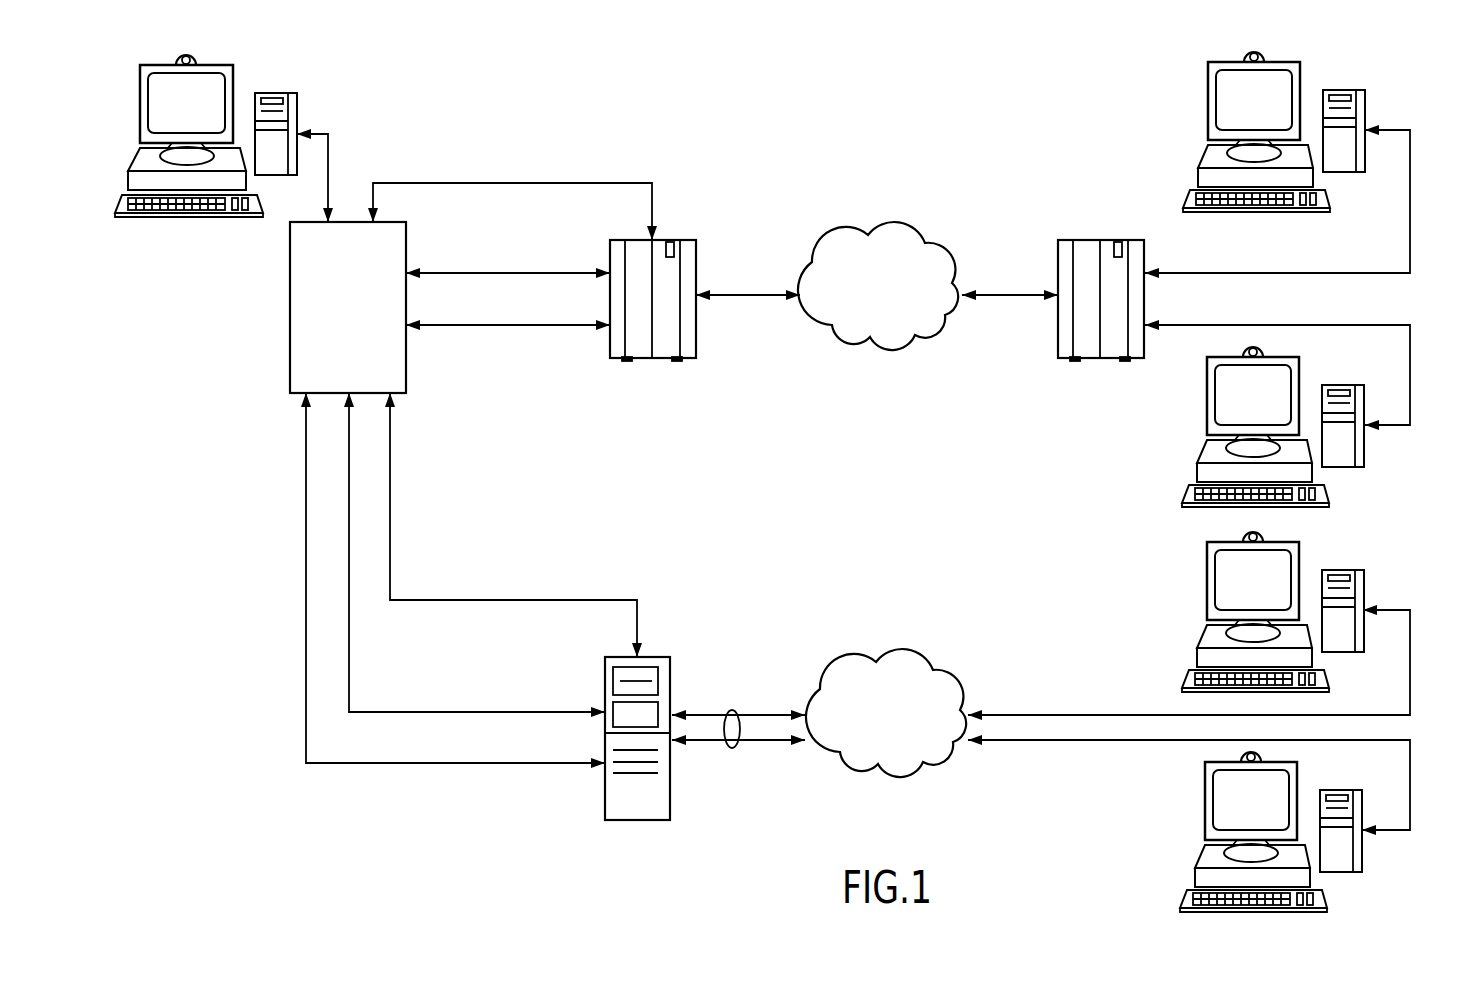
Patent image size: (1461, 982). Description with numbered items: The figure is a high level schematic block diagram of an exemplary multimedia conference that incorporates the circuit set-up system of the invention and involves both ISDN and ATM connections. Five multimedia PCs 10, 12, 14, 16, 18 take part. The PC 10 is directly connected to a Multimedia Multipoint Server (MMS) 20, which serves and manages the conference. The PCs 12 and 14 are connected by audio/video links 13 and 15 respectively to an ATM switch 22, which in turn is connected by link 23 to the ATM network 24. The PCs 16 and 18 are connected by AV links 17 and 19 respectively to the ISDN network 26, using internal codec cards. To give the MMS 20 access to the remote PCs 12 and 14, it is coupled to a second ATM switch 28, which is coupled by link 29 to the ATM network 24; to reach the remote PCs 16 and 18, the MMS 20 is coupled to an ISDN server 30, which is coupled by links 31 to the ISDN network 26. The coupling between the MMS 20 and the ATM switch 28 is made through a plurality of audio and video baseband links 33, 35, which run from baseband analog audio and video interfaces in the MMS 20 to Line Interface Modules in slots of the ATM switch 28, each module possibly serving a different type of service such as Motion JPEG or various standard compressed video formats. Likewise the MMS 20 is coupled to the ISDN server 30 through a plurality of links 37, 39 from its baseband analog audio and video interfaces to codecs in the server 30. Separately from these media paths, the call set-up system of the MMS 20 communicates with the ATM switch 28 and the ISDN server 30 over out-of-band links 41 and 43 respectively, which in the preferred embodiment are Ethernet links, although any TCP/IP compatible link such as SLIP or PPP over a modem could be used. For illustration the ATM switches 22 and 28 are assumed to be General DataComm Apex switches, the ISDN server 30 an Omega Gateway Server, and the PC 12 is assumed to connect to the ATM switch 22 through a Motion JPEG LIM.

The multimedia PC 10 is at (334, 105).
The multimedia PC 12 is at (1182, 97).
The audio/video link 13 is at (1410, 225).
The multimedia PC 14 is at (1182, 422).
The audio/video link 15 is at (1410, 372).
The multimedia PC 16 is at (1182, 587).
The audio/video link 17 is at (1410, 660).
The multimedia PC 18 is at (1182, 812).
The audio/video link 19 is at (1410, 785).
The Multimedia Multipoint Server (MMS) 20 is at (290, 345).
The ATM switch 22 is at (1090, 240).
The link 23 is at (1005, 295).
The ATM network 24 is at (893, 225).
The ISDN network 26 is at (900, 650).
The ATM switch 28 is at (685, 240).
The link 29 is at (748, 295).
The ISDN server 30 is at (633, 820).
The links 31 is at (730, 712).
The audio and video baseband link 33 is at (500, 273).
The audio and video baseband link 35 is at (500, 325).
The link 37 is at (463, 712).
The link 39 is at (465, 765).
The out-of-band link 41 is at (500, 183).
The out-of-band link 43 is at (483, 600).